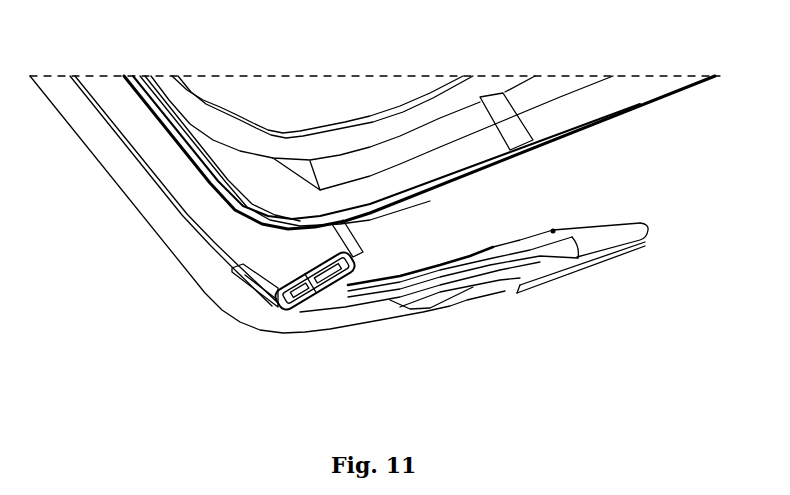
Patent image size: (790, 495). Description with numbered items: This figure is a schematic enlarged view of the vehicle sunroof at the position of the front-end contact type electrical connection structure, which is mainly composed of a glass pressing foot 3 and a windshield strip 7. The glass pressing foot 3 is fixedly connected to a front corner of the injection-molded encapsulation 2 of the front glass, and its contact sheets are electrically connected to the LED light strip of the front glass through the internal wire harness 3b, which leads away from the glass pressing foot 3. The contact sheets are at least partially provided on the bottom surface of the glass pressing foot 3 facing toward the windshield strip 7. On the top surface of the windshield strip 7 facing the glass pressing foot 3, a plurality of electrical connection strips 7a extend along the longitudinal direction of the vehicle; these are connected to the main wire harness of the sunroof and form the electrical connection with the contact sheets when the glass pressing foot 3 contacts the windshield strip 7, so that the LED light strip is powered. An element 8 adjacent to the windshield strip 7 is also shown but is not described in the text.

The injection-molded encapsulation 2 is at (395, 148).
The glass pressing foot 3 is at (308, 303).
The internal wire harness 3b is at (361, 254).
The windshield strip 7 is at (255, 313).
The electrical connection strips 7a is at (383, 293).
The clip arm 8 is at (630, 245).